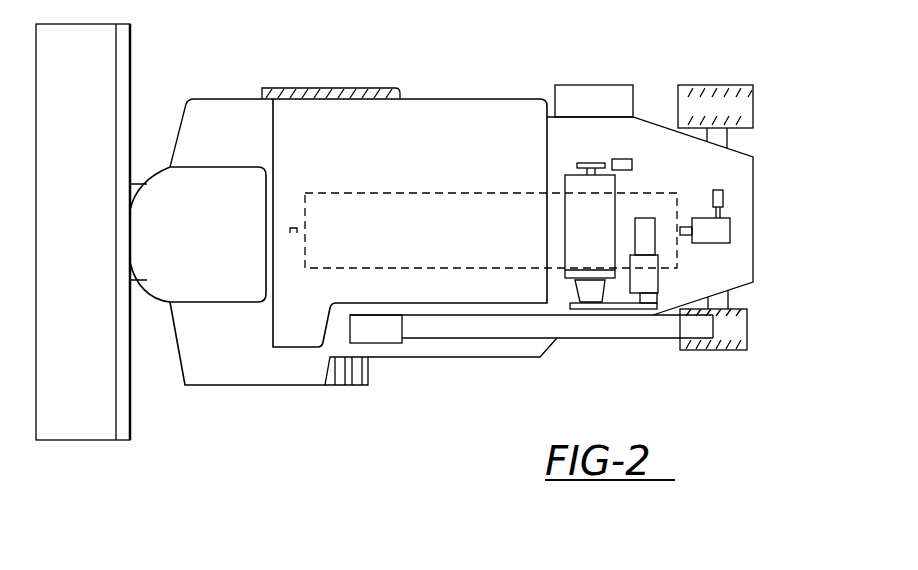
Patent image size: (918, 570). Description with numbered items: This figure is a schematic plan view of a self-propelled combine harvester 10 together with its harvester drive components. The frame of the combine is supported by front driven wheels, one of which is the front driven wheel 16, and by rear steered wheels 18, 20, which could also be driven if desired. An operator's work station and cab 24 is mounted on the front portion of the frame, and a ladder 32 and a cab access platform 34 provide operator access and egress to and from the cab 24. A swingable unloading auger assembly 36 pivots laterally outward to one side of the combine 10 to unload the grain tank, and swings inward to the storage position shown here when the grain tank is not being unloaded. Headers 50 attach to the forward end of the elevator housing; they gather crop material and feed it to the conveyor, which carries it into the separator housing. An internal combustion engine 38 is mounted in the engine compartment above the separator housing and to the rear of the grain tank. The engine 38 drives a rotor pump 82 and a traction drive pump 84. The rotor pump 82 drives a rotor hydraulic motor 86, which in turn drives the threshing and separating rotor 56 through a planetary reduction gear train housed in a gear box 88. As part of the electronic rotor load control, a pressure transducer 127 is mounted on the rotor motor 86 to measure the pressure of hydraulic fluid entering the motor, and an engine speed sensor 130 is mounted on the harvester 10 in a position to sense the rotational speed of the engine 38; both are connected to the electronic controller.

The combine harvester 10 is at (308, 398).
The front driven wheel 16 is at (277, 88).
The rear steered wheel 18 is at (737, 352).
The rear steered wheel 20 is at (735, 85).
The operator's work station and cab 24 is at (158, 175).
The ladder 32 is at (348, 385).
The cab access platform 34 is at (215, 368).
The unloading auger assembly 36 is at (487, 338).
The internal combustion engine 38 is at (570, 168).
The headers 50 is at (65, 443).
The threshing and separating rotor 56 is at (471, 190).
The rotor pump 82 is at (658, 278).
The traction drive pump 84 is at (657, 240).
The rotor hydraulic motor 86 is at (730, 238).
The gear box 88 is at (697, 215).
The pressure transducer 127 is at (725, 193).
The engine speed sensor 130 is at (622, 158).